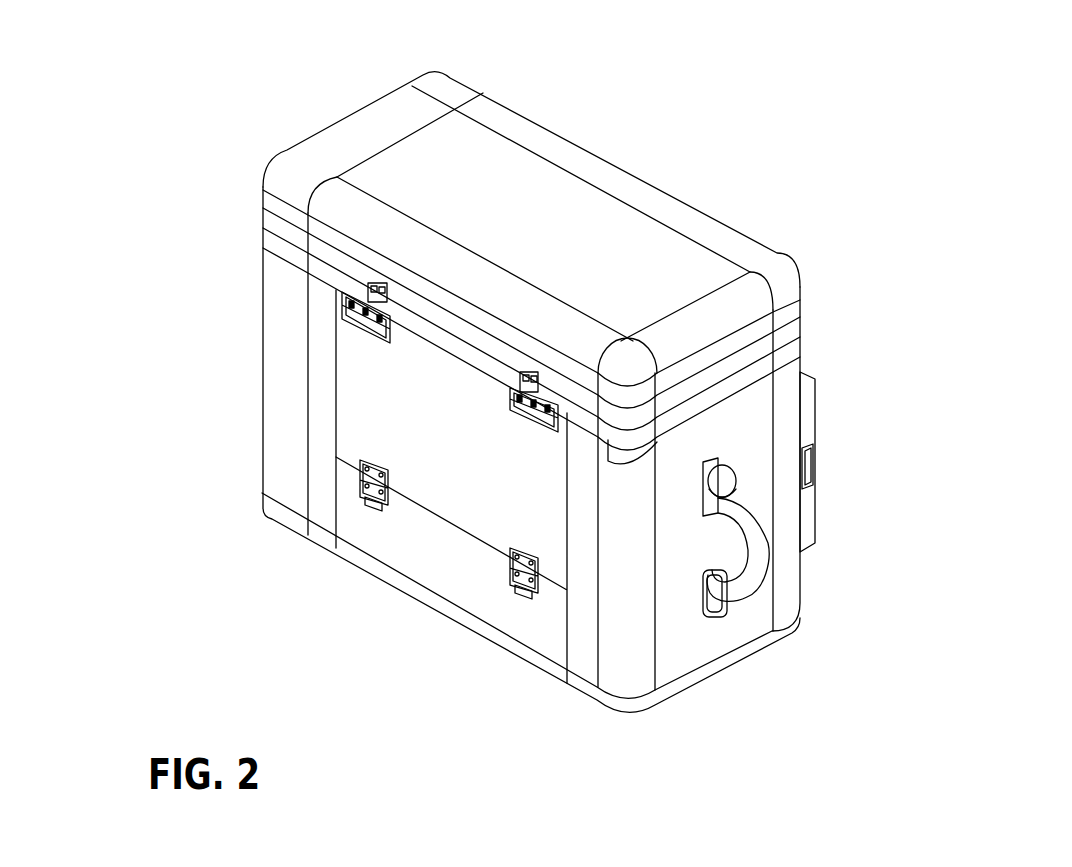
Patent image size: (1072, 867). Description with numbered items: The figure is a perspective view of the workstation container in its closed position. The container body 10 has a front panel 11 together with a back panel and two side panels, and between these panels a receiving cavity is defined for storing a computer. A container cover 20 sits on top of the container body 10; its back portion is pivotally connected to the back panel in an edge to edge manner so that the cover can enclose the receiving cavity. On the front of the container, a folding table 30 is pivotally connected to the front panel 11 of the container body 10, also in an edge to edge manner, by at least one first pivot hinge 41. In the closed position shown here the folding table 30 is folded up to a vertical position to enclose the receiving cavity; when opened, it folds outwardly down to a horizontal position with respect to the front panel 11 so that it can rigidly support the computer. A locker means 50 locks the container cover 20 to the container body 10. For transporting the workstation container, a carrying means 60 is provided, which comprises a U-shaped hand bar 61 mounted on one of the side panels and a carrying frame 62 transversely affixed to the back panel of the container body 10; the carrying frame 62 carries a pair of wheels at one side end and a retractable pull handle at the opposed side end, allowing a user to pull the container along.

The container body 10 is at (732, 623).
The front panel 11 is at (415, 553).
The container cover 20 is at (683, 255).
The folding table 30 is at (362, 382).
The first pivot hinge 41 is at (350, 477).
The locker means 50 is at (370, 300).
The carrying means 60 is at (930, 422).
The U-shaped hand bar 61 is at (765, 555).
The carrying frame 62 is at (808, 413).